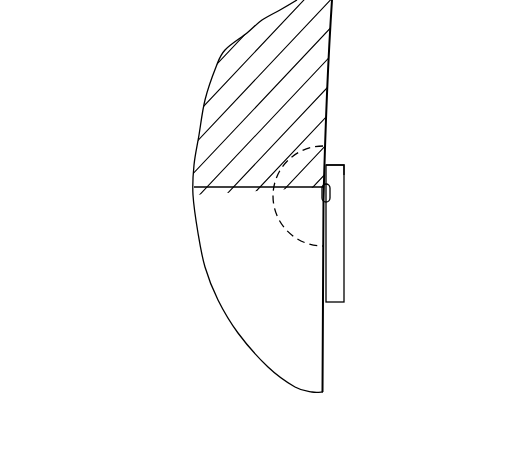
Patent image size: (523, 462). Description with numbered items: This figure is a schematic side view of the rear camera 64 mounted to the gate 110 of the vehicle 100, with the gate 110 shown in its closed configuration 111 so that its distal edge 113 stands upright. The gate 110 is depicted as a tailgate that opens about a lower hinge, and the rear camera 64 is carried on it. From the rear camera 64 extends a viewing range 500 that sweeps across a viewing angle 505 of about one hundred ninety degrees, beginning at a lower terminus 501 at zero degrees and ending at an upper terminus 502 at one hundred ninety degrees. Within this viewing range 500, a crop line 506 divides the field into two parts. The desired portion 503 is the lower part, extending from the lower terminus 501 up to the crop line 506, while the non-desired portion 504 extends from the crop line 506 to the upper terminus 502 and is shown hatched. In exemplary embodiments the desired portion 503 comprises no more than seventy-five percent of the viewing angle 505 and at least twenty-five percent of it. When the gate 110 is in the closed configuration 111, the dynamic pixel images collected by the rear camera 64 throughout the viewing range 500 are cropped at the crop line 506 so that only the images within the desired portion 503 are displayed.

The vehicle 100 is at (195, 371).
The viewing range 500 is at (131, 184).
The lower terminus 501 is at (327, 391).
The upper terminus 502 is at (343, 0).
The desired portion 503 is at (205, 268).
The non-desired portion 504 is at (203, 118).
The viewing angle 505 is at (288, 232).
The crop line 506 is at (203, 185).
The closed configuration 111 is at (362, 138).
The gate 110 is at (345, 228).
The distal edge 113 is at (338, 158).
The rear camera 64 is at (331, 192).